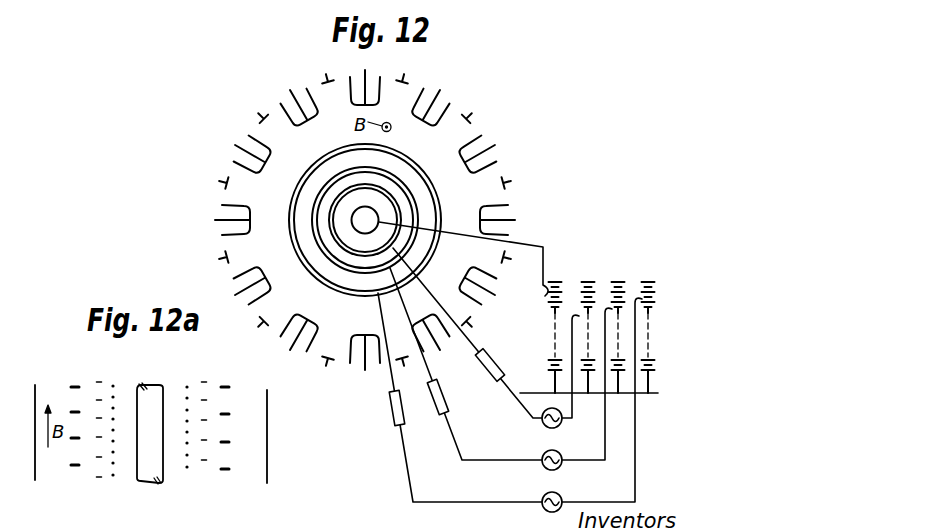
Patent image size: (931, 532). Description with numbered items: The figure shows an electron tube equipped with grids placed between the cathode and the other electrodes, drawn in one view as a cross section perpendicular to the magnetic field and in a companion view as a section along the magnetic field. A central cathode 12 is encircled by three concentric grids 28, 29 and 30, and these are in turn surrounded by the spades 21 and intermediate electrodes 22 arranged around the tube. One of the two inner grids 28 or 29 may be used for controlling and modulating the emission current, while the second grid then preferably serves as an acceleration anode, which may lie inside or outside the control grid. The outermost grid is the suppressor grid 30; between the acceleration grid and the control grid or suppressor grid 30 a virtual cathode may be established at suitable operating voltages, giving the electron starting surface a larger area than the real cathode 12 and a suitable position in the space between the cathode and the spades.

In FIG. 12, the cathode 12 is at (365, 220).
In FIG. 12A, the cathode 12 is at (142, 385).
In FIG. 12, the spade 21 is at (257, 146).
In FIG. 12, the intermediate electrode 22 is at (226, 181).
In FIG. 12, the inner grid 28 is at (398, 197).
In FIG. 12A, the inner grid 28 is at (187, 477).
In FIG. 12, the inner grid 29 is at (418, 203).
In FIG. 12A, the inner grid 29 is at (203, 481).
In FIG. 12, the suppressor grid 30 is at (448, 262).
In FIG. 12A, the suppressor grid 30 is at (223, 473).